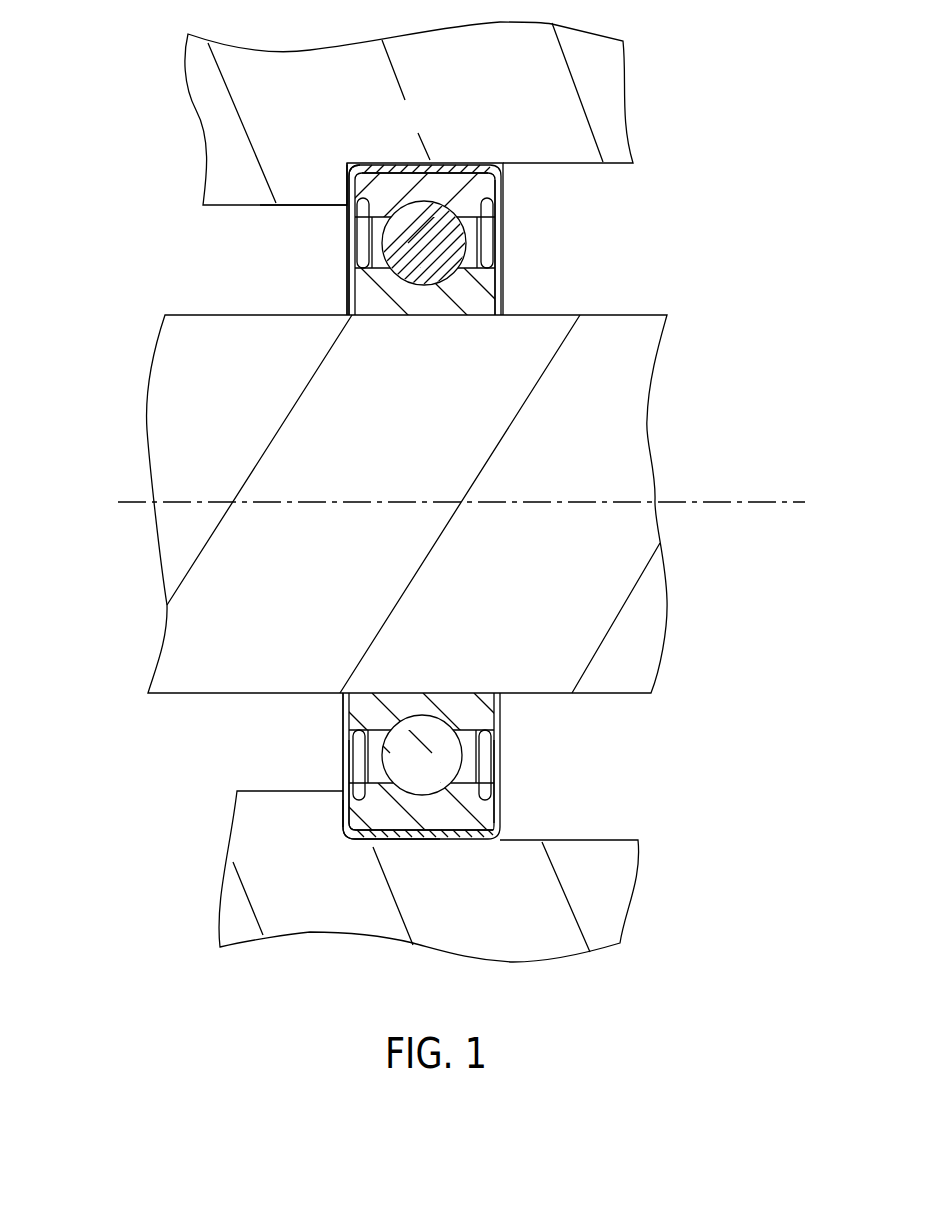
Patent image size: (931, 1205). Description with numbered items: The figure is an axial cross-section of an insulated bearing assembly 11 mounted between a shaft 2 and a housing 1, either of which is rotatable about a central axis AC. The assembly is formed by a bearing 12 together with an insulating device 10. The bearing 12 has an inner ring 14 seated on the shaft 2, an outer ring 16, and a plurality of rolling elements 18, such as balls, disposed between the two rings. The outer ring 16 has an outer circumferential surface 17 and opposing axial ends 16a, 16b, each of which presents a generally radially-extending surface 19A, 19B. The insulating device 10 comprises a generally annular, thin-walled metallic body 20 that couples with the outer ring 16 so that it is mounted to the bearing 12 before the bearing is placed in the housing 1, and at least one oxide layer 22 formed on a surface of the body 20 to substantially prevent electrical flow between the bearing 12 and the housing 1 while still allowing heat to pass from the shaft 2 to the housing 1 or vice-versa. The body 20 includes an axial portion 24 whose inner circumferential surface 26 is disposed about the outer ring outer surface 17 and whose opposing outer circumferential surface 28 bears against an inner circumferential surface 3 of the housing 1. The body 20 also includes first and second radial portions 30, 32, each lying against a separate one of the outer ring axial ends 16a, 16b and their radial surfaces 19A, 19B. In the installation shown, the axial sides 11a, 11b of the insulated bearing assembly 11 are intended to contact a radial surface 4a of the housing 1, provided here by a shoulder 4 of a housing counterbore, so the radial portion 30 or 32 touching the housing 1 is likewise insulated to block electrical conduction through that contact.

The housing 1 is at (178, 89).
The shaft 2 is at (130, 384).
The inner circumferential surface 3 is at (613, 170).
The shoulder 4 is at (331, 203).
The radial surface 4a is at (353, 180).
The insulating device 10 is at (428, 200).
The electrically insulated bearing assembly 11 is at (274, 221).
The axial side 11a is at (510, 312).
The axial side 11b is at (340, 287).
The bearing 12 is at (510, 282).
The inner ring 14 is at (480, 712).
The outer ring 16 is at (412, 805).
The axial end 16a is at (488, 840).
The axial end 16b is at (343, 800).
The outer circumferential surface 17 is at (399, 172).
The rolling elements 18 is at (447, 242).
The radially-extending surface 19A is at (493, 803).
The radially-extending surface 19B is at (342, 805).
The metallic body 20 is at (423, 193).
The oxide layer 22 is at (330, 820).
The axial portion 24 is at (430, 158).
The inner circumferential surface 26 is at (452, 838).
The outer circumferential surface 28 is at (375, 845).
The first radial portion 30 is at (508, 202).
The second radial portion 32 is at (340, 185).
The central axis AC is at (758, 500).